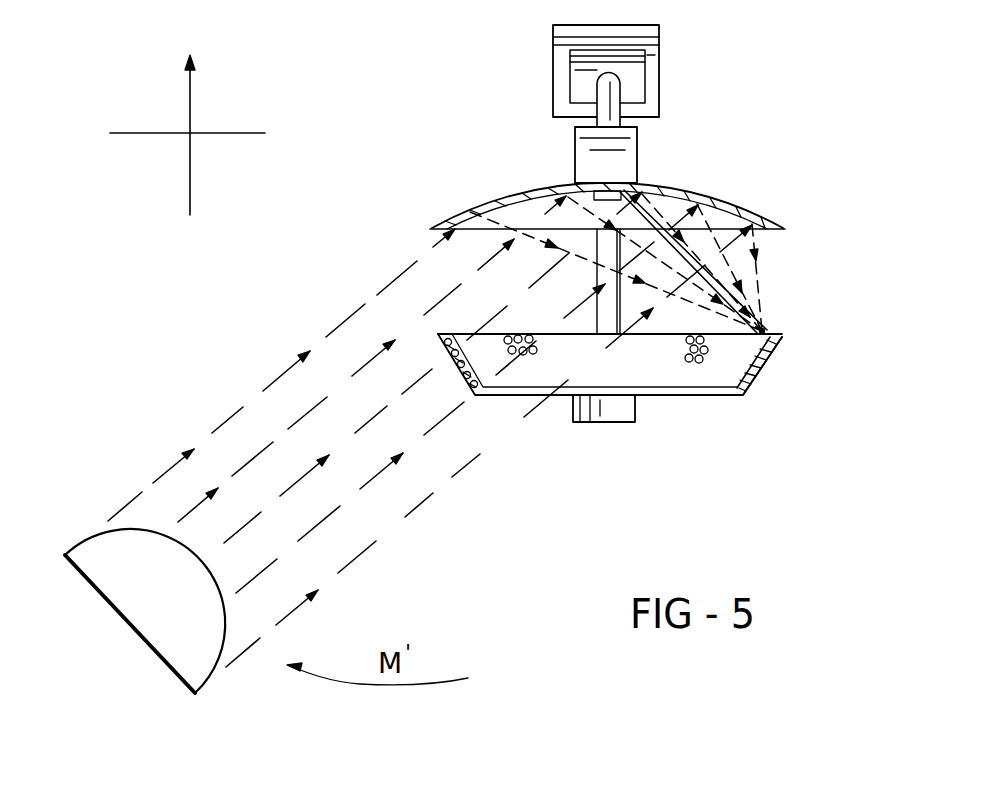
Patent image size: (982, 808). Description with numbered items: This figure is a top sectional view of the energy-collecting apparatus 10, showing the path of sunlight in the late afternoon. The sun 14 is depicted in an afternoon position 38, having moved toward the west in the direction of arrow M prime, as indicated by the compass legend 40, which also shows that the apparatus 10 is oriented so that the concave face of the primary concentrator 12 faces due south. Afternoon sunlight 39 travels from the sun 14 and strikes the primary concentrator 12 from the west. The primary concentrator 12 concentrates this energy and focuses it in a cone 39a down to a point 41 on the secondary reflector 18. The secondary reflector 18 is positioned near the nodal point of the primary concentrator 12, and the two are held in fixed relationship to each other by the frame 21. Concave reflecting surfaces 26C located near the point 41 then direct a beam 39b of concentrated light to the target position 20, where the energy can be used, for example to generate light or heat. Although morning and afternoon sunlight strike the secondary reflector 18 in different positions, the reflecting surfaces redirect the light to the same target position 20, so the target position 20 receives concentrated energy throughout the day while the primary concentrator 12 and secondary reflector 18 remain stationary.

The apparatus for collecting energy 10 is at (452, 99).
The primary concentrator 12 is at (491, 201).
The moving energy source 14 is at (164, 593).
The secondary reflector 18 is at (713, 397).
The target position 20 is at (620, 190).
The frame 21 is at (659, 82).
The concave reflecting surfaces 26C is at (763, 330).
The afternoon position 38 is at (68, 552).
The afternoon sunlight 39 is at (216, 424).
The cone 39a is at (759, 270).
The beam of concentrated light 39b is at (702, 200).
The compass legend 40 is at (175, 159).
The point 41 is at (774, 360).